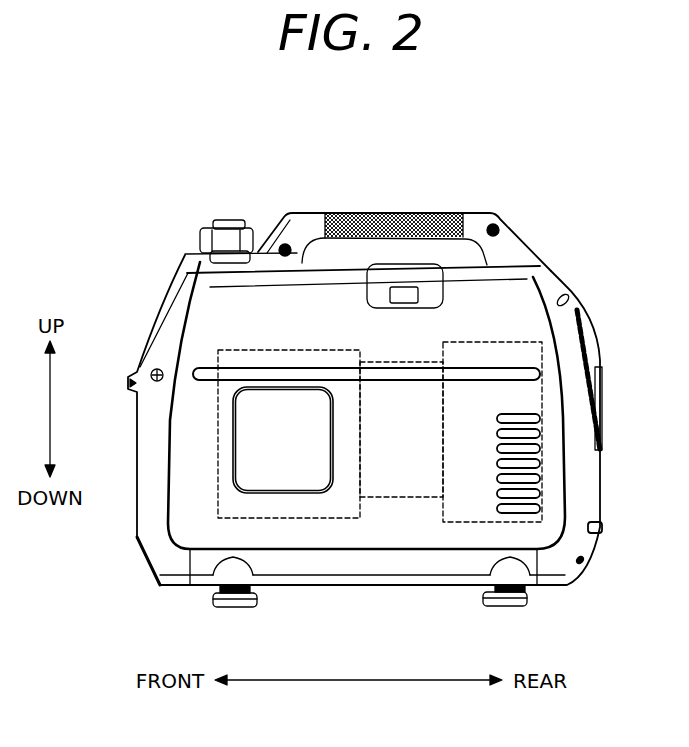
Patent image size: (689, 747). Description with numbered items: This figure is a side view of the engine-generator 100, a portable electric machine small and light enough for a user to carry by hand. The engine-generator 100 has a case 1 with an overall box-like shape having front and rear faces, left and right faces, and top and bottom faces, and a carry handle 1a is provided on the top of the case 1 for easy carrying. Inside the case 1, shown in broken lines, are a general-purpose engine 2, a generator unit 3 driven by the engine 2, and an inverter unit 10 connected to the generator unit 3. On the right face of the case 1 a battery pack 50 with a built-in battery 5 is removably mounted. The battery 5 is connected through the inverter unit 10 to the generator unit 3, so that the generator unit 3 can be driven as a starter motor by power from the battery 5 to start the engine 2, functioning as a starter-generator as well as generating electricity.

The engine-generator 100 is at (590, 212).
The case 1 is at (247, 312).
The carry handle 1a is at (411, 211).
The battery pack 50 is at (233, 437).
The battery 5 is at (250, 460).
The inverter unit 10 is at (297, 518).
The generator unit 3 is at (398, 497).
The general-purpose engine 2 is at (470, 522).